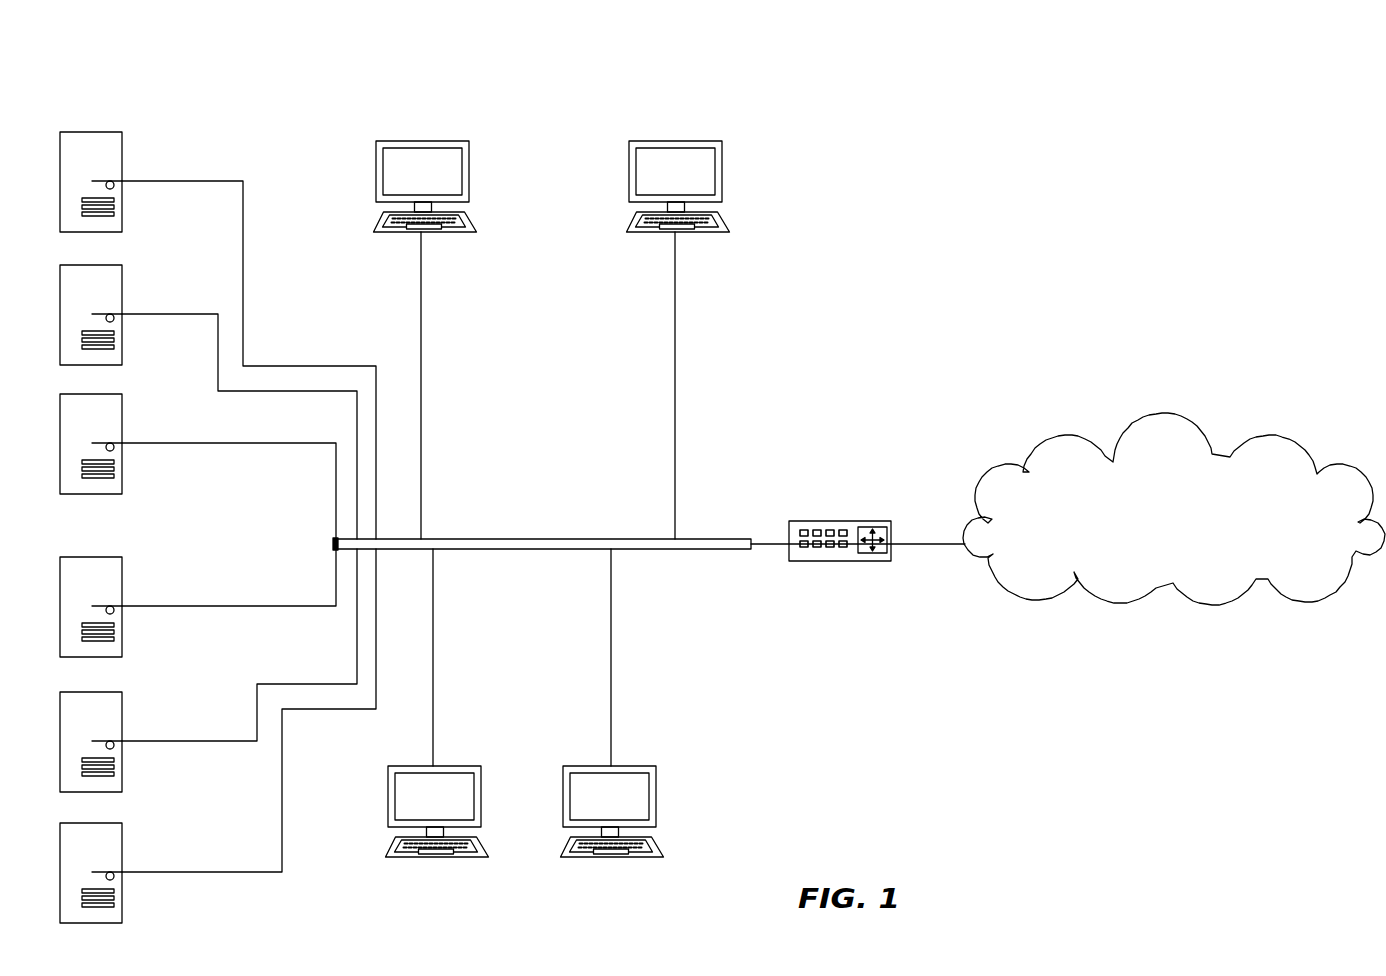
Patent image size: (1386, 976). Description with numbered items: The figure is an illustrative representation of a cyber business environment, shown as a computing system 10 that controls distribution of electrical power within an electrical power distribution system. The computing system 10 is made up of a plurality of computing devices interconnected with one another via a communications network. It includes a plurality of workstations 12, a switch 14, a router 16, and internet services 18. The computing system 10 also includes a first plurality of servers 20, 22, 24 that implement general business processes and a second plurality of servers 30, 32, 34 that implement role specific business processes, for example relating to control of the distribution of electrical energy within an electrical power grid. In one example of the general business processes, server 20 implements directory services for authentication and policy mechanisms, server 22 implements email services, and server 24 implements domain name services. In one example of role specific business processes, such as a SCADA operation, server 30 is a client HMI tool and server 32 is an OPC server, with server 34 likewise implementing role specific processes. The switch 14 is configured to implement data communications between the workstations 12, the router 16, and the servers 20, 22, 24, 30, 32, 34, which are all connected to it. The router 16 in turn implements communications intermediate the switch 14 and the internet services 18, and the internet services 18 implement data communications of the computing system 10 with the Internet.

The computing system 10 is at (970, 136).
The workstations 12 is at (470, 171).
The switch 14 is at (650, 549).
The router 16 is at (834, 561).
The internet services 18 is at (1160, 603).
The server 20 is at (59, 197).
The server 22 is at (59, 330).
The server 24 is at (59, 459).
The server 30 is at (59, 622).
The server 32 is at (59, 757).
The server 34 is at (59, 888).